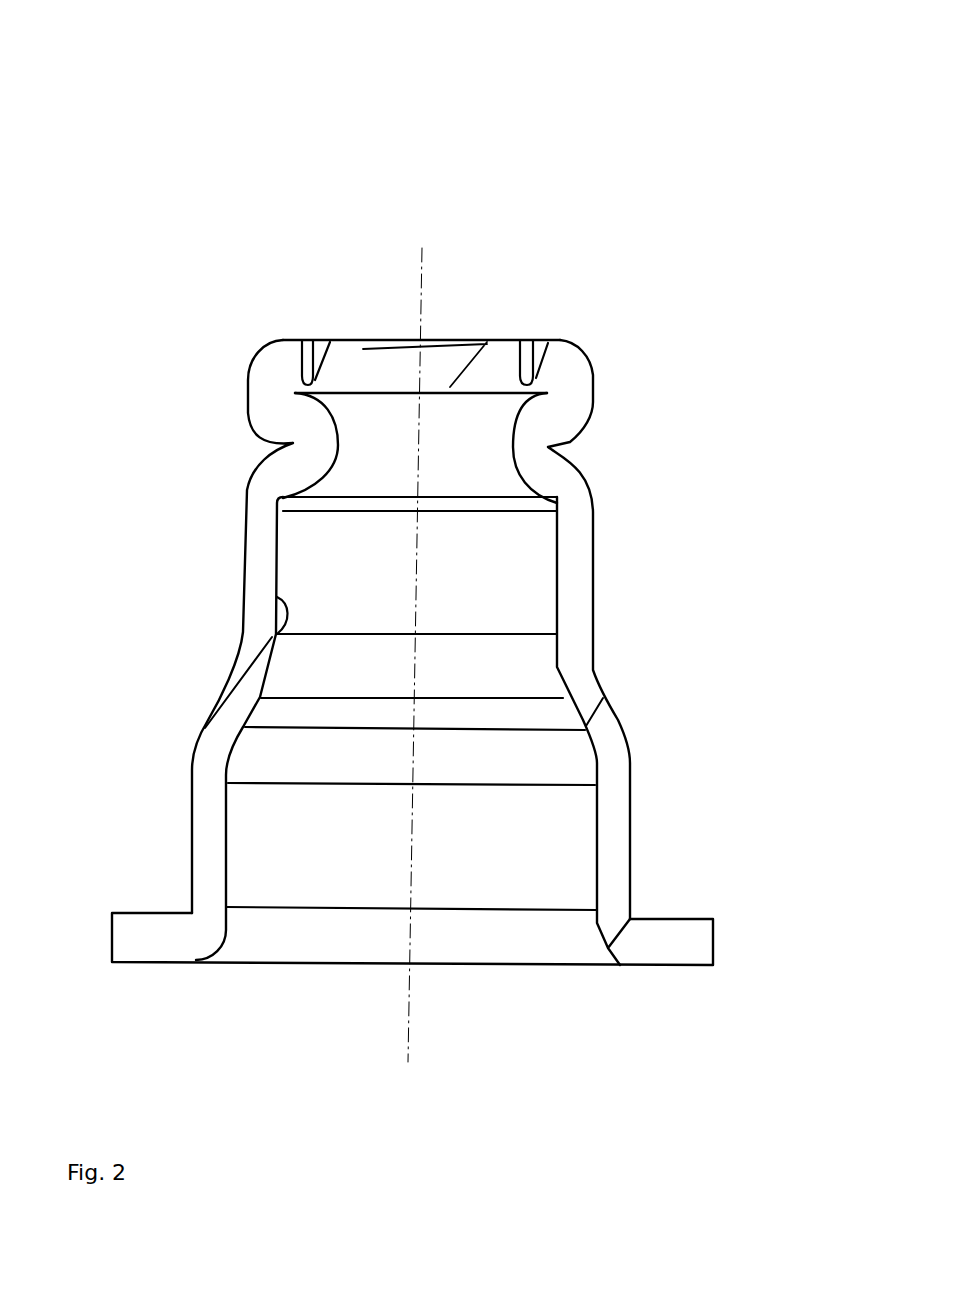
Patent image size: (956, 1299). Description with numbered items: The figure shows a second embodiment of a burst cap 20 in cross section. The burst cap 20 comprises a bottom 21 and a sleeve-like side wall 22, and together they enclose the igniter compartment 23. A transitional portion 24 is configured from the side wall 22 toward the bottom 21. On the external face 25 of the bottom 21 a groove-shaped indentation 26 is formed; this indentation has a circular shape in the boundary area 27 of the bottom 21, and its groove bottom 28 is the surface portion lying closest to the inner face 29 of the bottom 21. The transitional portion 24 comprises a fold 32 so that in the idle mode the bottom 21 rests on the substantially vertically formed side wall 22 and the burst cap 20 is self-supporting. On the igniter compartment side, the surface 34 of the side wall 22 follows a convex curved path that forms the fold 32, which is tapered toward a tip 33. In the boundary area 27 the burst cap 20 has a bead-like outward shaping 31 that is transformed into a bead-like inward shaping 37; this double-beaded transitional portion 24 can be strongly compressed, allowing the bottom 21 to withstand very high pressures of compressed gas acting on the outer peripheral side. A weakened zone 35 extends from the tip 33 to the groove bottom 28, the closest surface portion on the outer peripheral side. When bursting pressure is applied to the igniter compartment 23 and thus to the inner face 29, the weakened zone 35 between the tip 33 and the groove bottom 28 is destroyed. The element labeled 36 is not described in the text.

The burst cap 20 is at (698, 205).
The bottom 21 is at (363, 357).
The sleeve-like side wall 22 is at (590, 613).
The igniter compartment 23 is at (352, 852).
The transitional portion 24 is at (188, 350).
The external face 25 is at (315, 380).
The groove-shaped indentation 26 is at (301, 344).
The boundary area 27 is at (582, 340).
The groove bottom 28 is at (307, 380).
The inner face 29 is at (364, 405).
The bead-like outward shaping 31 is at (572, 408).
The fold 32 is at (285, 480).
The tip 33 is at (292, 390).
The surface of the side wall on the igniter compartment side 34 is at (277, 641).
The weakened zone 35 is at (248, 380).
The flange 36 is at (677, 933).
The bead-like inward shaping 37 is at (556, 481).